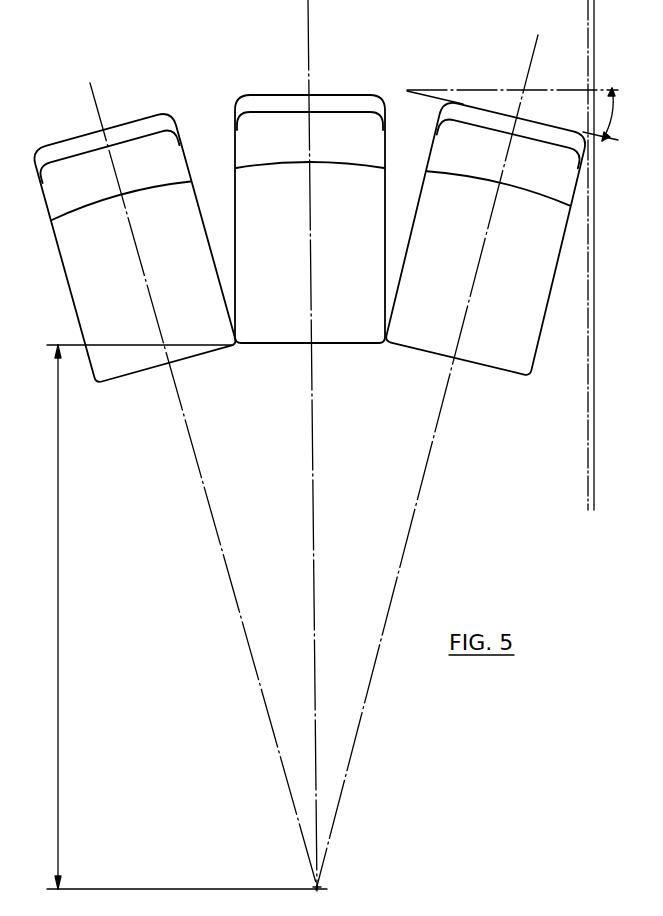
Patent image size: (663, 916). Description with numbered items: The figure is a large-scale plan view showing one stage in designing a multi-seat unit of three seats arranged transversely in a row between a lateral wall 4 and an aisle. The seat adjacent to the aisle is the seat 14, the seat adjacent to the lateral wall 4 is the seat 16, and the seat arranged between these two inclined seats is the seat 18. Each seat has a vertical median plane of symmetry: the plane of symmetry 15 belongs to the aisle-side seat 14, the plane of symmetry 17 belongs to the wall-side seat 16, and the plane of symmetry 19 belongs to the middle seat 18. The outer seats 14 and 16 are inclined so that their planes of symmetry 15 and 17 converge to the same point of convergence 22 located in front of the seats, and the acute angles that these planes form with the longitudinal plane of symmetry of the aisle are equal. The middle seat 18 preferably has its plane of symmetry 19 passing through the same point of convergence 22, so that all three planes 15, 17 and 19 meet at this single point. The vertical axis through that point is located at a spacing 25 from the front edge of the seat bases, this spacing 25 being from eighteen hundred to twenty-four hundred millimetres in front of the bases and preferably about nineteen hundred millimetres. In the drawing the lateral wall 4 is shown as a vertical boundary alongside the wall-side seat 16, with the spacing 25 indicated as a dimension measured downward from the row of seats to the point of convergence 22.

The seat adjacent to an aisle 14 is at (533, 377).
The seat adjacent to a lateral wall 16 is at (94, 374).
The seat not adjacent to an aisle or lateral wall 18 is at (366, 346).
The plane of symmetry of the seat adjacent to an aisle 15 is at (432, 448).
The plane of symmetry of the seat adjacent to a lateral wall 17 is at (207, 497).
The plane of symmetry of the middle seat 19 is at (314, 473).
The lateral wall 4 is at (590, 488).
The point of convergence 22 is at (318, 885).
The spacing 25 is at (59, 638).